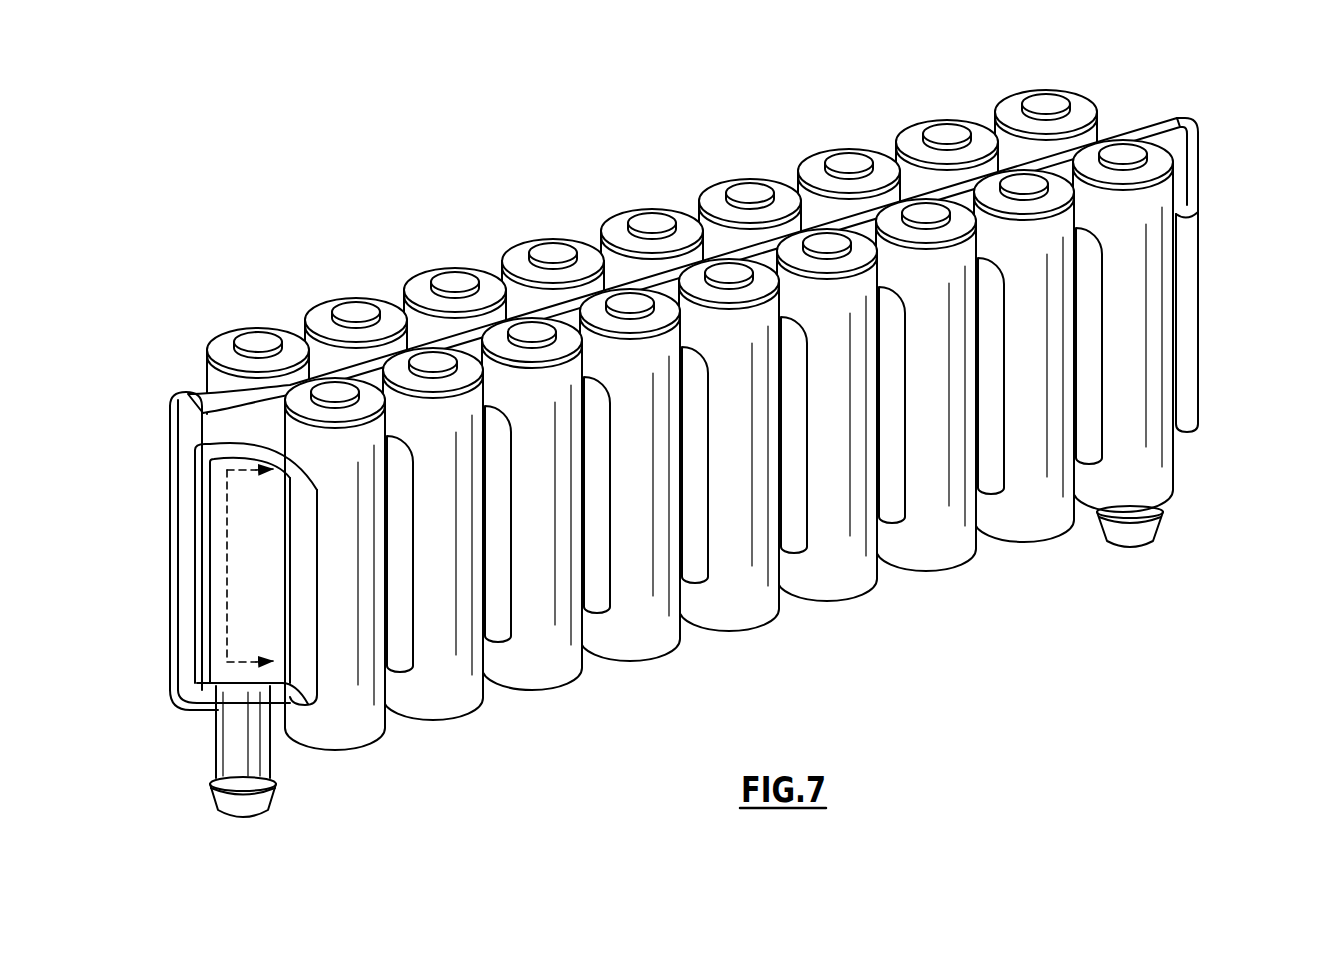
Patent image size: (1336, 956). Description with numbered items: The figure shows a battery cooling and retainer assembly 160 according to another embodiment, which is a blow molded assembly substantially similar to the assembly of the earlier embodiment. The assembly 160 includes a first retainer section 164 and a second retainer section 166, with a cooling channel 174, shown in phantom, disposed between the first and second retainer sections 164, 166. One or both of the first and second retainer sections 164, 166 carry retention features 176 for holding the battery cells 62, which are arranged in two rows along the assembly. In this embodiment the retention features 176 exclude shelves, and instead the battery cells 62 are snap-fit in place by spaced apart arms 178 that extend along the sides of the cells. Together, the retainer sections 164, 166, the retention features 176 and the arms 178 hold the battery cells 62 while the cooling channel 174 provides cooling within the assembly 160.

The battery cell 62 is at (345, 720).
The battery cooling and retainer assembly 160 is at (236, 494).
The first retainer section 164 is at (1137, 117).
The second retainer section 166 is at (1199, 338).
The cooling channel 174 is at (244, 606).
The retention feature 176 is at (730, 556).
The arm 178 is at (792, 518).